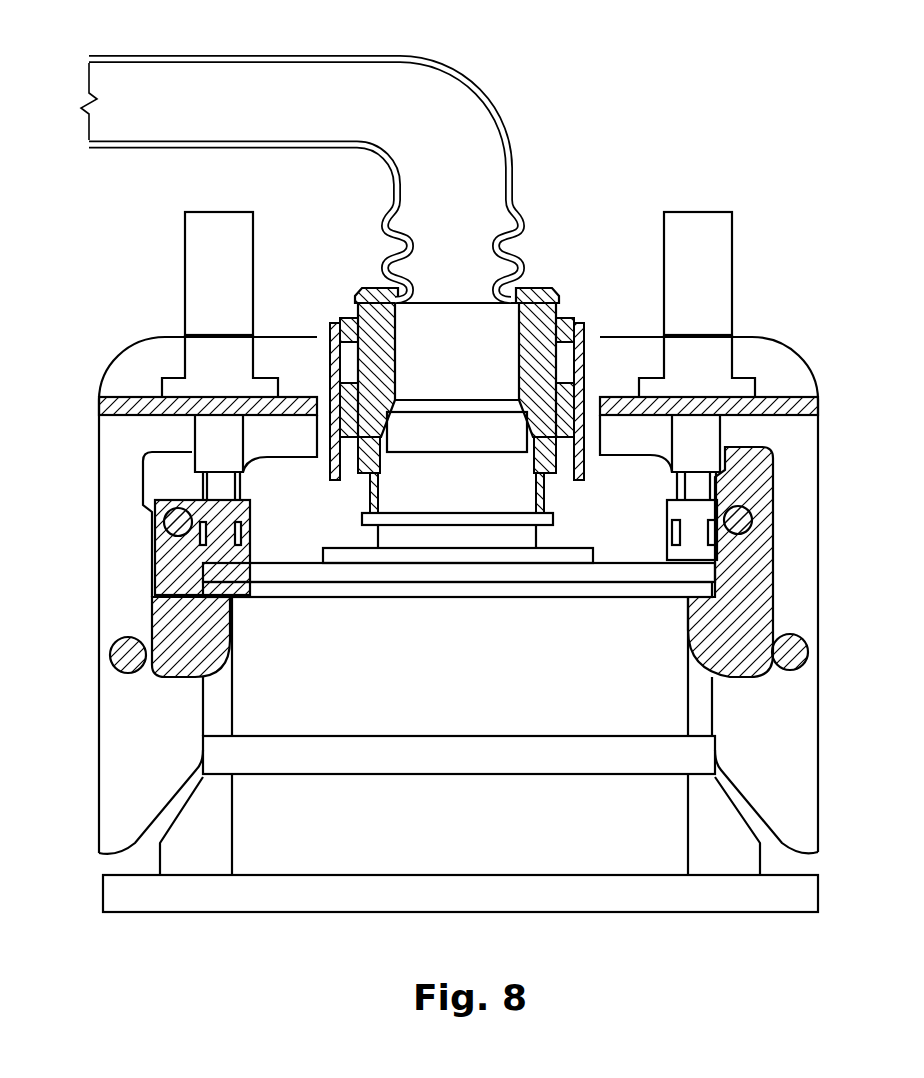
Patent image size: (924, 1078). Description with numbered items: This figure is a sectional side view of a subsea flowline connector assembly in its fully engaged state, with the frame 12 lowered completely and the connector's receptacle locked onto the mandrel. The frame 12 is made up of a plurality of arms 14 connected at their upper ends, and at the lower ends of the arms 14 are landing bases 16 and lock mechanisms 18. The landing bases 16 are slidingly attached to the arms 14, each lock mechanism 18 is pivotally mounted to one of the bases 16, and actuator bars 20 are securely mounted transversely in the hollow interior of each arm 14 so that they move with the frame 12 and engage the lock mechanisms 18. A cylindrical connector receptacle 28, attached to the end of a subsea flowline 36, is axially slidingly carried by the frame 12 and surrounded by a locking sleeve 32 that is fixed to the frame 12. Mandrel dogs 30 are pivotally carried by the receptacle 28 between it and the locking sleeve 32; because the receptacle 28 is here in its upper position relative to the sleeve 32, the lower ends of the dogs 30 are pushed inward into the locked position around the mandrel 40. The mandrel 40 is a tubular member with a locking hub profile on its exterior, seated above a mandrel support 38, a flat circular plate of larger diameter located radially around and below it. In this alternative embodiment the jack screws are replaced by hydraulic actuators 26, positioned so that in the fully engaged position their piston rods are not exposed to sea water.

The frame 12 is at (318, 335).
The arms 14 is at (808, 492).
The landing bases 16 is at (150, 585).
The lock mechanisms 18 is at (150, 622).
The actuator bars 20 is at (112, 655).
The hydraulic actuators 26 is at (197, 234).
The connector receptacle 28 is at (385, 345).
The mandrel dogs 30 is at (343, 480).
The locking sleeve 32 is at (337, 320).
The subsea flowline 36 is at (300, 56).
The mandrel support 38 is at (388, 592).
The mandrel 40 is at (372, 448).